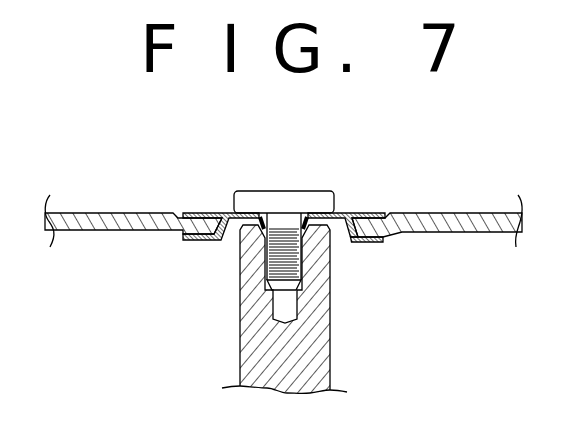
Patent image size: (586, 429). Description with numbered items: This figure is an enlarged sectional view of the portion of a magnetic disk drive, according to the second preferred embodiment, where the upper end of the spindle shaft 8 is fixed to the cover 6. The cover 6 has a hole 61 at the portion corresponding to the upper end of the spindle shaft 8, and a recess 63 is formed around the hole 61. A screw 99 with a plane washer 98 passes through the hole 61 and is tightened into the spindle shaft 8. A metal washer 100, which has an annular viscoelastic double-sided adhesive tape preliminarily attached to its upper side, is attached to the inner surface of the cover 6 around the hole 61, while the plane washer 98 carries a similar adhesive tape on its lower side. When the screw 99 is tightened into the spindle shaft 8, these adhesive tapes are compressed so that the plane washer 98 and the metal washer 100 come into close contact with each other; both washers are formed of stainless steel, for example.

The cover 6 is at (470, 213).
The spindle shaft 8 is at (330, 337).
The hole 61 is at (205, 212).
The recess 63 is at (180, 212).
The plane washer 98 is at (370, 213).
The screw 99 is at (287, 191).
The metal washer 100 is at (373, 242).